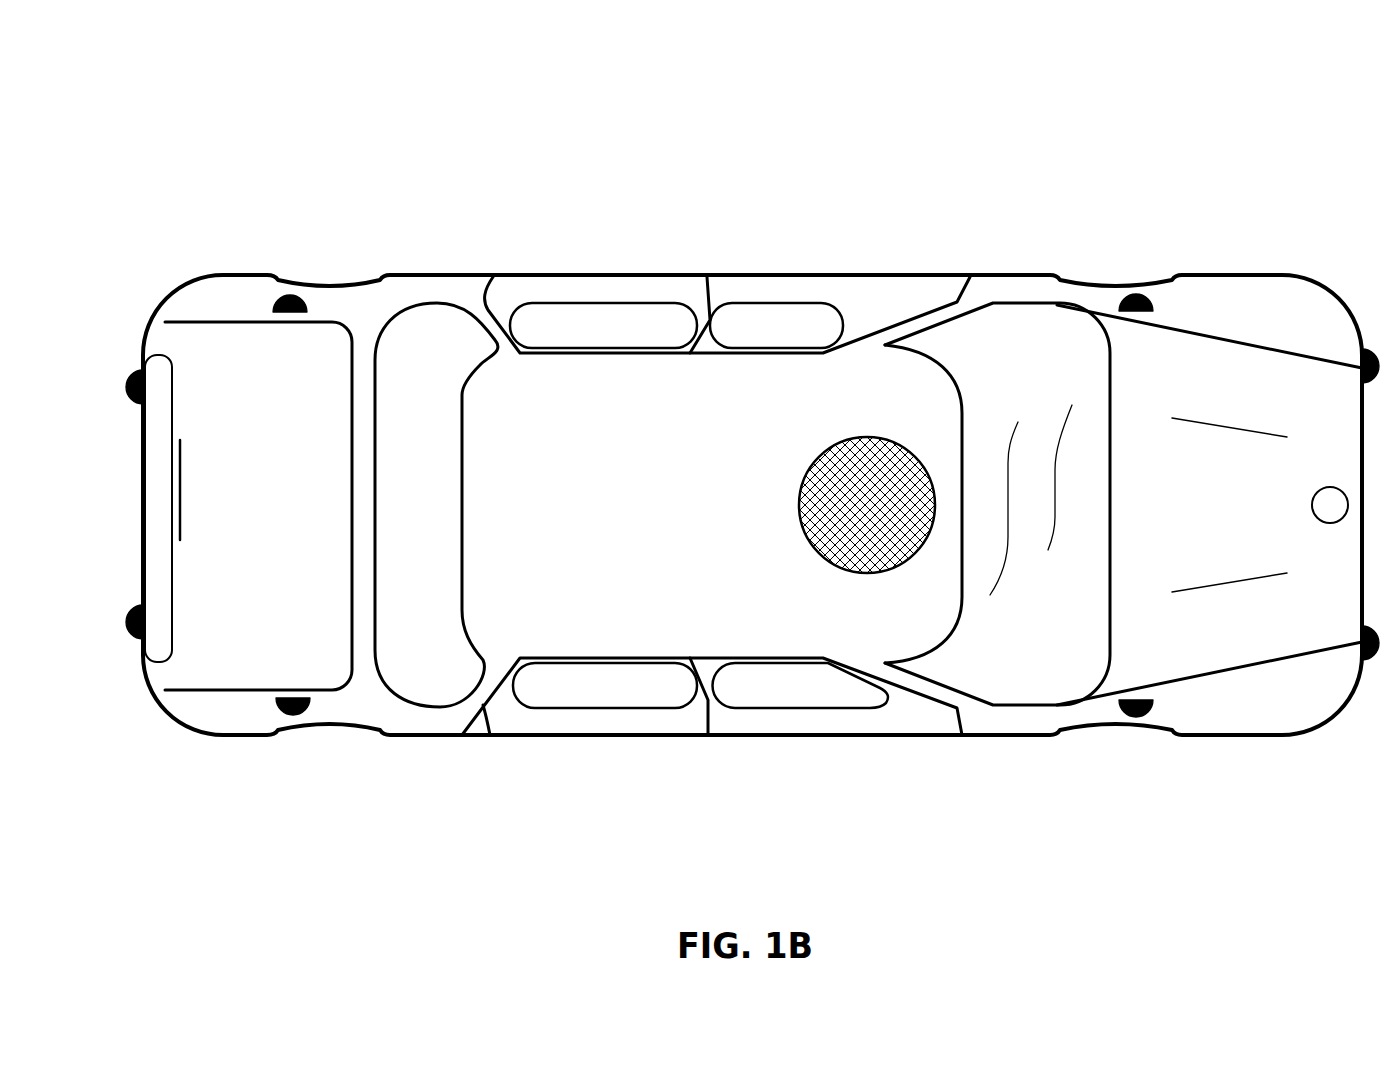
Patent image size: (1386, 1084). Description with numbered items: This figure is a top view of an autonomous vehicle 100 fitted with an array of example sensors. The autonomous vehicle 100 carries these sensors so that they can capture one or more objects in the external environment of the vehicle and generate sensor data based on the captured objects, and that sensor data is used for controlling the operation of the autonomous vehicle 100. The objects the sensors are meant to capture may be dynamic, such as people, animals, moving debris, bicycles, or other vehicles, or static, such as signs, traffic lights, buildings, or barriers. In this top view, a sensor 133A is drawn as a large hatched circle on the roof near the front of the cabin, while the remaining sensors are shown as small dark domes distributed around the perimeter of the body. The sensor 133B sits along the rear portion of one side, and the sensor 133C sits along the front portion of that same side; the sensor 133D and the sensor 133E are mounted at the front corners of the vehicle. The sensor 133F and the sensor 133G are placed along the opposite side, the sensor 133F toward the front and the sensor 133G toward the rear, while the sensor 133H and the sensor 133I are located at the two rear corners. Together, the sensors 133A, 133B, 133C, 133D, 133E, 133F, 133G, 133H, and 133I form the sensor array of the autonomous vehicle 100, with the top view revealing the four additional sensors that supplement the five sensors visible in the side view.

The autonomous vehicle 100 is at (1237, 107).
The sensor 133A is at (821, 458).
The sensor 133B is at (312, 702).
The sensor 133C is at (1153, 707).
The sensor 133D is at (1360, 640).
The sensor 133E is at (1360, 370).
The sensor 133F is at (1153, 307).
The sensor 133G is at (307, 309).
The sensor 133H is at (146, 390).
The sensor 133I is at (146, 623).